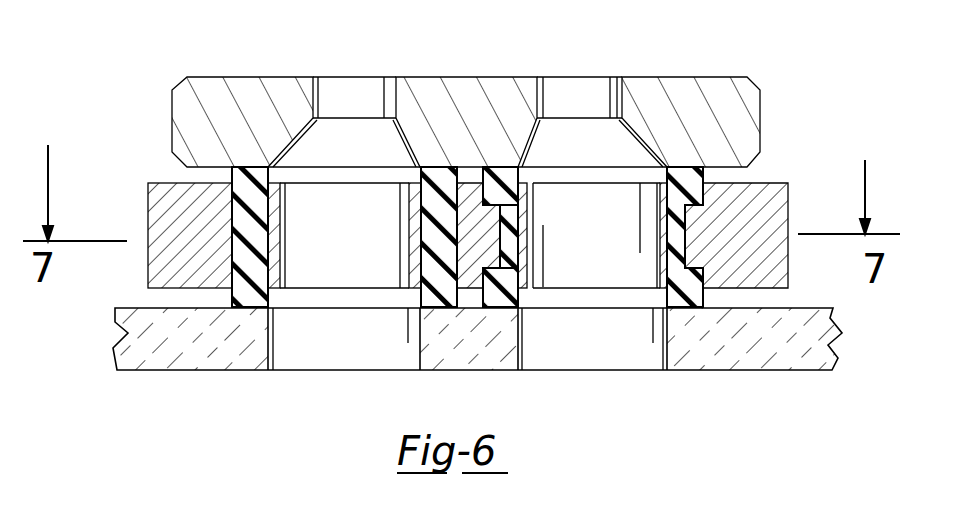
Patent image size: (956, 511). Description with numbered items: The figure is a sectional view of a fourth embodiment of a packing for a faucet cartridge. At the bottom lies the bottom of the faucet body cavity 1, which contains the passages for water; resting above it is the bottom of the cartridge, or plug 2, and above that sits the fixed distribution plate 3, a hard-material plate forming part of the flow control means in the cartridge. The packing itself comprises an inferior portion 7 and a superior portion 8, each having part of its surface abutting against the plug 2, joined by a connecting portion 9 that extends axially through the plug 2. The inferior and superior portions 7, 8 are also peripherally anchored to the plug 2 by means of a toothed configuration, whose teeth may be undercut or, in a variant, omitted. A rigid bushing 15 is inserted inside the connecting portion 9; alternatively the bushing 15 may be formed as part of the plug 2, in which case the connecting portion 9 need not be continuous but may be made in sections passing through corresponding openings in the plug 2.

The bottom of faucet body cavity 1 is at (212, 350).
The bottom of cartridge 2 is at (168, 205).
The fixed distribution plate 3 is at (248, 97).
The inferior portion 7 is at (505, 295).
The superior portion 8 is at (497, 173).
The connecting portion 9 is at (507, 228).
The rigid bushing 15 is at (528, 253).